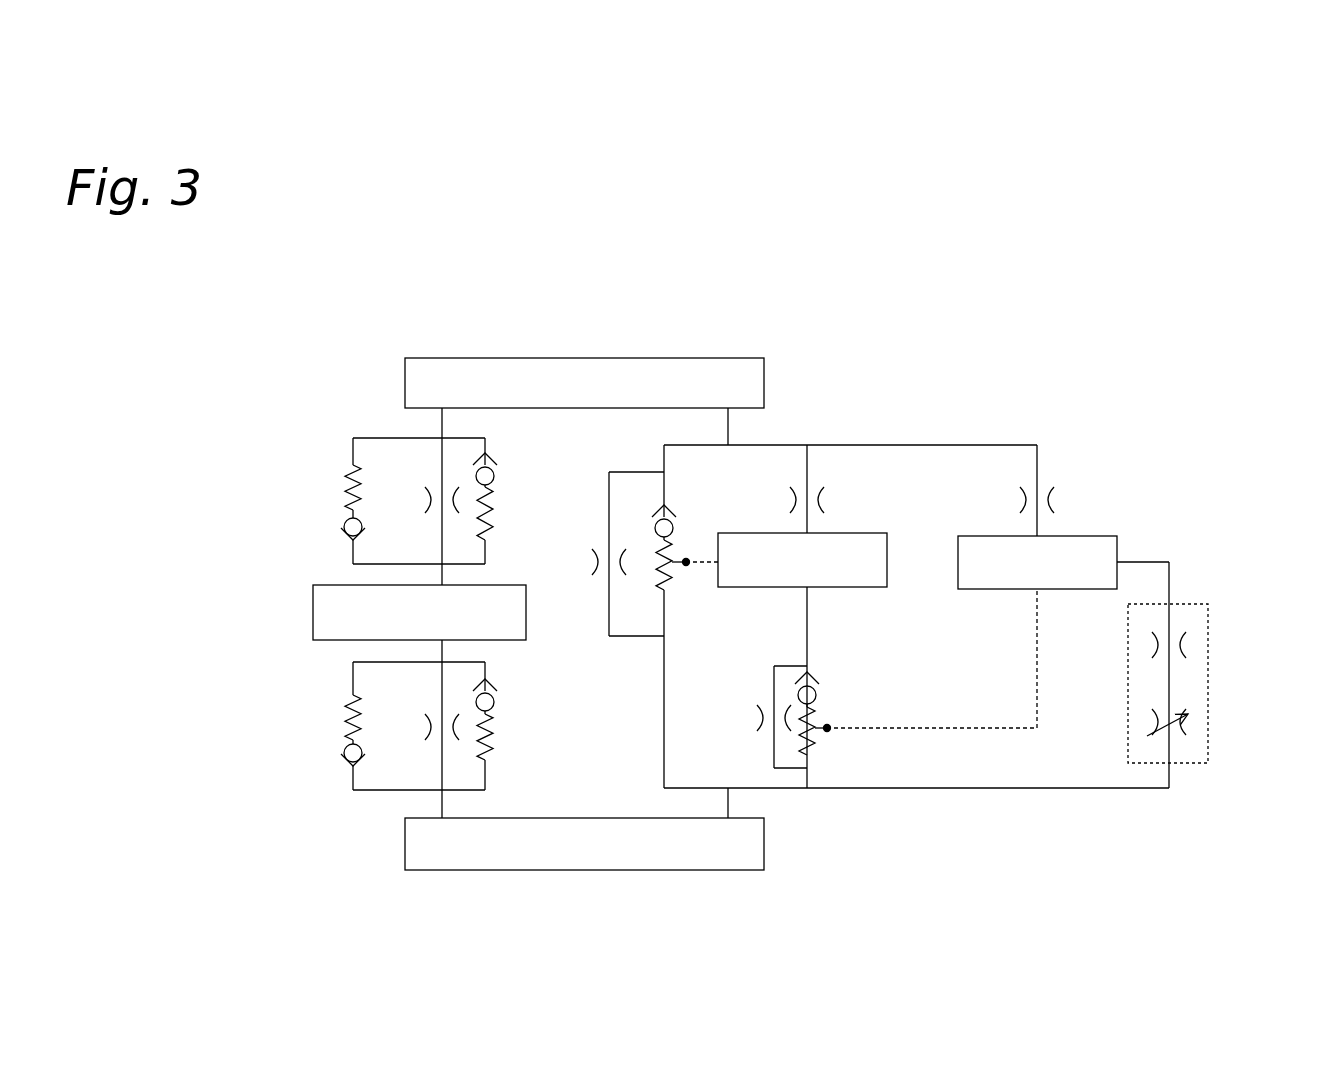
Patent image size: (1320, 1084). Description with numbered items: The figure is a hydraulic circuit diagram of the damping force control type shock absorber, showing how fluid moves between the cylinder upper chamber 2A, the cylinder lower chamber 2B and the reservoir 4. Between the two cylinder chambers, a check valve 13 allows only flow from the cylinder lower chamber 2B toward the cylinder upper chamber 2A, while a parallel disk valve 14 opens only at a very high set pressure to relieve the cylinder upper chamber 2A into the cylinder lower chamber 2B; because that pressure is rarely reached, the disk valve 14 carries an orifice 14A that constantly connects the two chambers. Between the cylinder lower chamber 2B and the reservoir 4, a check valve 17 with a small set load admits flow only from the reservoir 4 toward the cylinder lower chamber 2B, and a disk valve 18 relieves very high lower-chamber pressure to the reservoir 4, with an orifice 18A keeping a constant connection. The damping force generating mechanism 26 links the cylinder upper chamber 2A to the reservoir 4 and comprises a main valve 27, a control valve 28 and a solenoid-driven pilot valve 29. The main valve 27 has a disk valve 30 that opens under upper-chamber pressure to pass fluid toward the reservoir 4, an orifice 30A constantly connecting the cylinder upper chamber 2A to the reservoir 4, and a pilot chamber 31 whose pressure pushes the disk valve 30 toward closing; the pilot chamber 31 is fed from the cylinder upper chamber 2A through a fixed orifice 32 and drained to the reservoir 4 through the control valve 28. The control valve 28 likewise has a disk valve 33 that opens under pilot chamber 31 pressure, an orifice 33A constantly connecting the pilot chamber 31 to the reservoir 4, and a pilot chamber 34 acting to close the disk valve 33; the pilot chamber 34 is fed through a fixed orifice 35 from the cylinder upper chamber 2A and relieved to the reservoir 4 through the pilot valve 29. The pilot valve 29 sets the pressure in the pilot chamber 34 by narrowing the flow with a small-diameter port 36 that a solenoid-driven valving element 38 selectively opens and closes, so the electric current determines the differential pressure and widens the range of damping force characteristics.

The cylinder upper chamber 2A is at (690, 358).
The cylinder lower chamber 2B is at (312, 604).
The reservoir 4 is at (667, 870).
The check valve 13 is at (345, 538).
The disk valve 14 is at (495, 474).
The orifice 14A is at (427, 497).
The check valve 17 is at (346, 757).
The disk valve 18 is at (495, 701).
The orifice 18A is at (430, 725).
The damping force generating mechanism 26 is at (984, 423).
The main valve 27 is at (688, 600).
The control valve 28 is at (842, 709).
The pilot valve 29 is at (1217, 590).
The disk valve 30 is at (673, 523).
The orifice 30A is at (602, 560).
The pilot chamber 31 is at (888, 545).
The fixed orifice 32 is at (815, 501).
The disk valve 33 is at (817, 690).
The orifice 33A is at (762, 716).
The pilot chamber 34 is at (1118, 545).
The fixed orifice 35 is at (1047, 500).
The port 36 is at (1181, 645).
The valving element 38 is at (1181, 728).